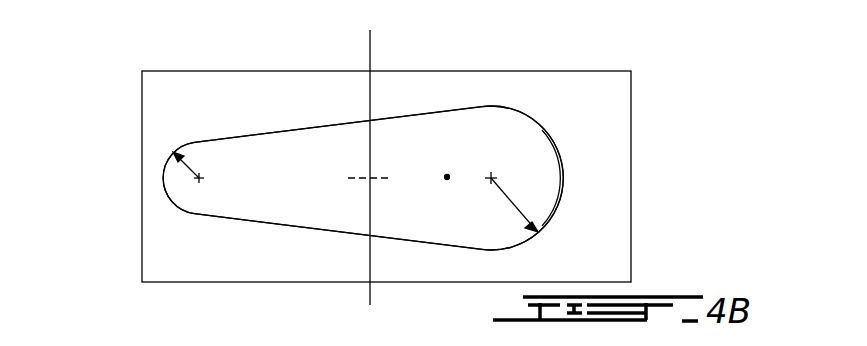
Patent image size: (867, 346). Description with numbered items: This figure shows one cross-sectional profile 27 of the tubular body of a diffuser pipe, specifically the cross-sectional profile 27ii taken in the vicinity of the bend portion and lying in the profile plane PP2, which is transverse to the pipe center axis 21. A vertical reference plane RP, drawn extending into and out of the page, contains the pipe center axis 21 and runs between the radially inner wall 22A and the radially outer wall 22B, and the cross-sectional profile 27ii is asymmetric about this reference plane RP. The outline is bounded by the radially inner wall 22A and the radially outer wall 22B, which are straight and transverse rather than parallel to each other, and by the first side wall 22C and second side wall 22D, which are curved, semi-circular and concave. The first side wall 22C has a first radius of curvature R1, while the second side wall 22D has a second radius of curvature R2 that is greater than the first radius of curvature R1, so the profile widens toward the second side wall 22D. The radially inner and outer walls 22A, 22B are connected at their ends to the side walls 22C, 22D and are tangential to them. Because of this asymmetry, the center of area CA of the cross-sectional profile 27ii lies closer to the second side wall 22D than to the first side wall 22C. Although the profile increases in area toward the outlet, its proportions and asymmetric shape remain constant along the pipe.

The profile plane PP2 is at (162, 89).
The reference plane RP is at (370, 41).
The cross-sectional profile 27 is at (553, 138).
The cross-sectional profile 27ii is at (522, 178).
The radially inner wall 22A is at (403, 239).
The radially outer wall 22B is at (308, 127).
The first side wall 22C is at (163, 177).
The second side wall 22D is at (563, 178).
The first radius of curvature R1 is at (175, 156).
The second radius of curvature R2 is at (515, 202).
The center of area CA is at (447, 174).
The pipe center axis 21 is at (372, 180).